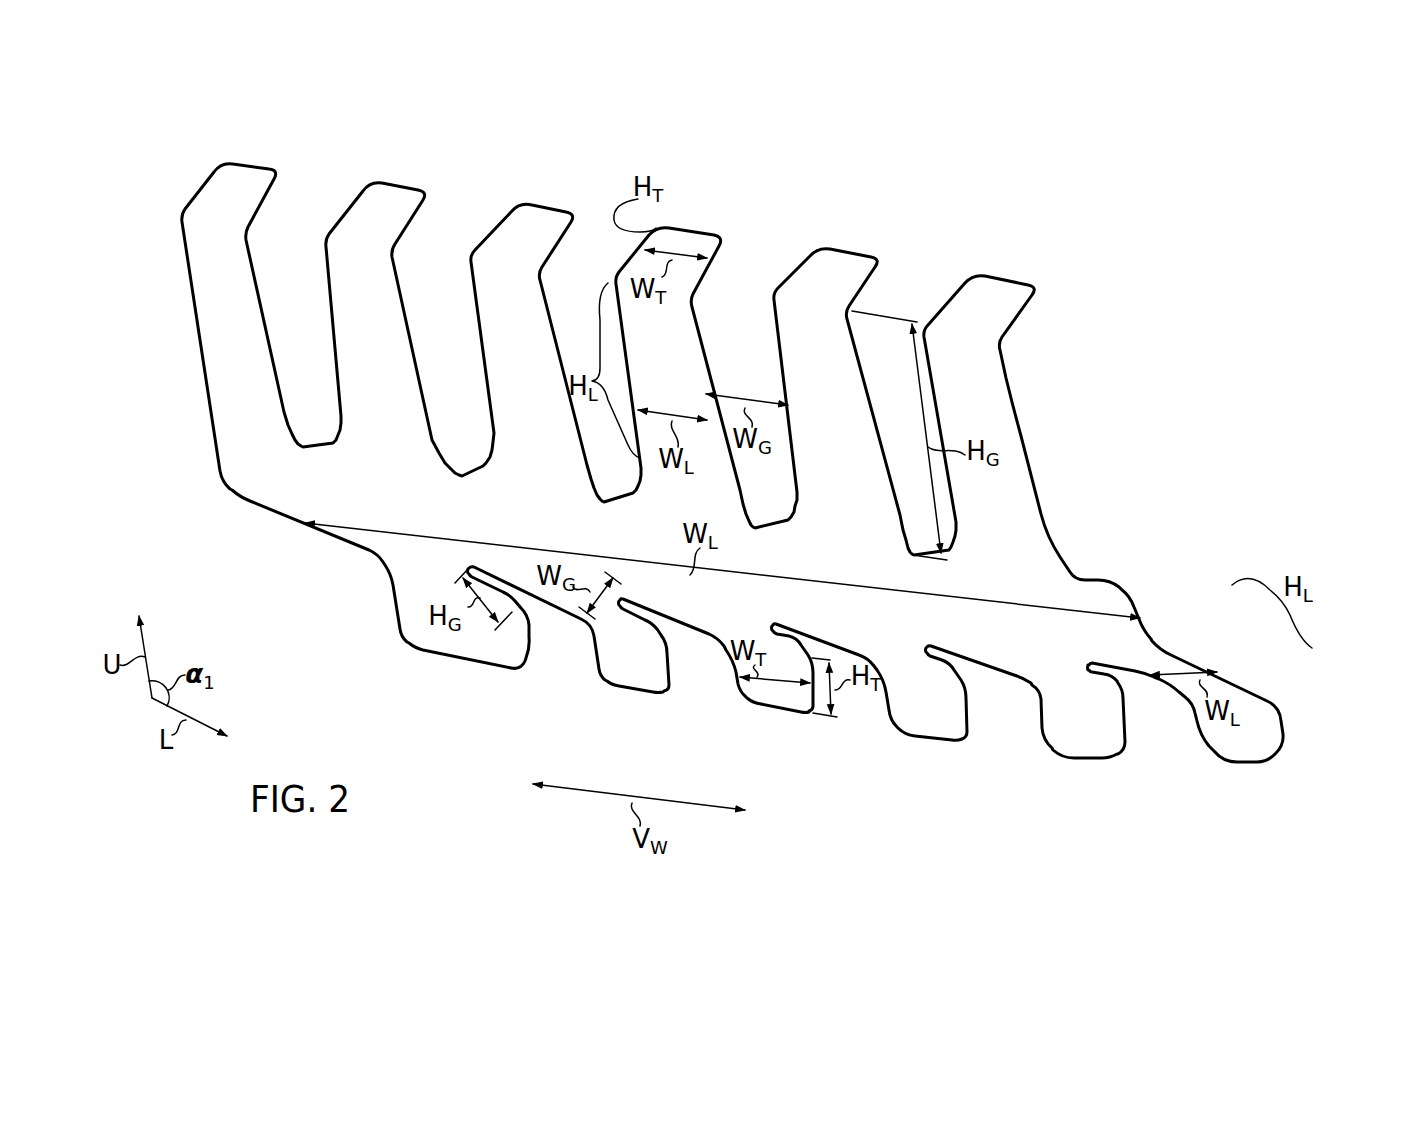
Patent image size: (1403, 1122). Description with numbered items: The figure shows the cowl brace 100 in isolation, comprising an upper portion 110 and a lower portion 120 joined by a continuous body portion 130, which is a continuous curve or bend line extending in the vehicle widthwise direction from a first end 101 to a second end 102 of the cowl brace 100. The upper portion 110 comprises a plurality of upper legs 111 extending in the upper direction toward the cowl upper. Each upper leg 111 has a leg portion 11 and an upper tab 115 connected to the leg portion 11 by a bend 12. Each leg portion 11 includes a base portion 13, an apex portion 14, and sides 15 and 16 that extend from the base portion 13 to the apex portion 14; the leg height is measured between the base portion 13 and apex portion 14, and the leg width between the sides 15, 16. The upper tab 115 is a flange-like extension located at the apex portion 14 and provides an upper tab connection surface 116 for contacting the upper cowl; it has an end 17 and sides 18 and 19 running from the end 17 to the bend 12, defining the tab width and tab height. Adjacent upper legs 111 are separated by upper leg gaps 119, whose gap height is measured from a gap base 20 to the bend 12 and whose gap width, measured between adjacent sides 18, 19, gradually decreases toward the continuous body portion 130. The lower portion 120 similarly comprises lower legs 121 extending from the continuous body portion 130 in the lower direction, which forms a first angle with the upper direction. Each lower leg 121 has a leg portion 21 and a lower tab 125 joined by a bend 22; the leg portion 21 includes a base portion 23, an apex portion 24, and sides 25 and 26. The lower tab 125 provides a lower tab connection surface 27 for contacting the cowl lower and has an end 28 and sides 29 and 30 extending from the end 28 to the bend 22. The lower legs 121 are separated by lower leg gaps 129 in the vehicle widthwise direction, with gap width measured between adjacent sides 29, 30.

The cowl brace 100 is at (1210, 298).
The upper portion 110 is at (177, 300).
The lower portion 120 is at (382, 600).
The leg portion 11 is at (192, 390).
The bend 12 is at (190, 216).
The base portion 13 is at (247, 456).
The apex portion 14 is at (198, 229).
The side 15 is at (200, 360).
The side 16 is at (268, 350).
The end 17 is at (375, 183).
The side 18 is at (325, 235).
The side 19 is at (408, 256).
The gap base 20 is at (905, 560).
The leg portion 21 is at (1190, 658).
The bend 22 is at (1278, 697).
The base portion 23 is at (1142, 657).
The apex portion 24 is at (1256, 713).
The side 25 is at (1163, 683).
The side 26 is at (1230, 670).
The lower tab connection surface 27 is at (1293, 723).
The end 28 is at (1267, 762).
The side 29 is at (1200, 747).
The side 30 is at (1287, 737).
The first end 101 is at (236, 500).
The second end 102 is at (1077, 575).
The upper leg 111 is at (258, 283).
The upper tab 115 is at (255, 167).
The upper tab connection surface 116 is at (218, 203).
The upper leg gap 119 is at (306, 197).
The lower leg 121 is at (522, 588).
The lower tab 125 is at (457, 660).
The lower leg gap 129 is at (557, 670).
The continuous body portion 130 is at (222, 490).